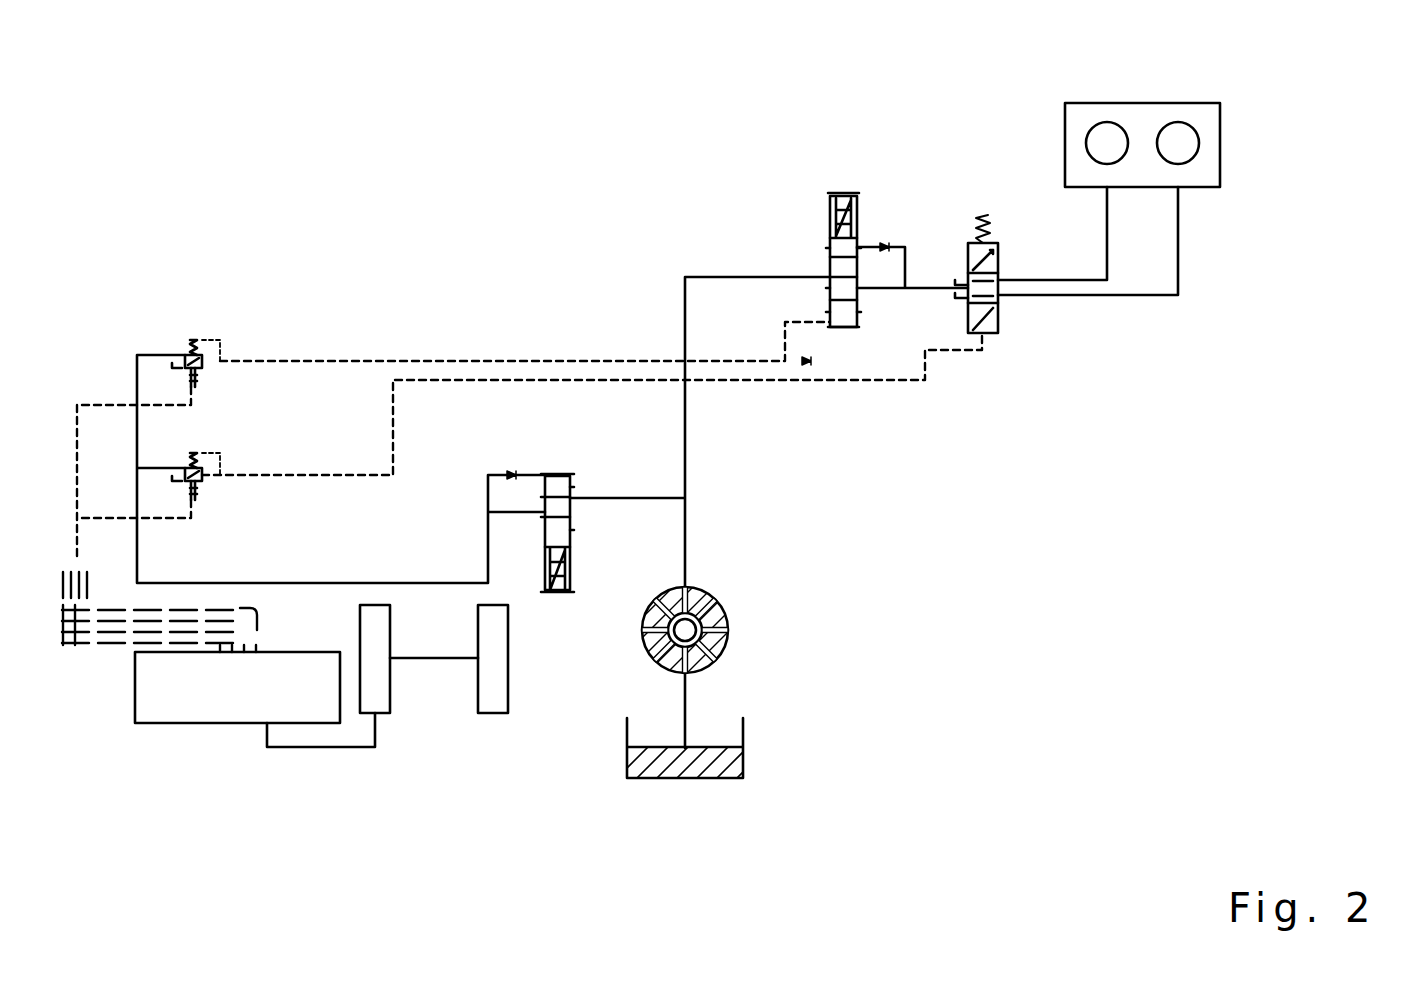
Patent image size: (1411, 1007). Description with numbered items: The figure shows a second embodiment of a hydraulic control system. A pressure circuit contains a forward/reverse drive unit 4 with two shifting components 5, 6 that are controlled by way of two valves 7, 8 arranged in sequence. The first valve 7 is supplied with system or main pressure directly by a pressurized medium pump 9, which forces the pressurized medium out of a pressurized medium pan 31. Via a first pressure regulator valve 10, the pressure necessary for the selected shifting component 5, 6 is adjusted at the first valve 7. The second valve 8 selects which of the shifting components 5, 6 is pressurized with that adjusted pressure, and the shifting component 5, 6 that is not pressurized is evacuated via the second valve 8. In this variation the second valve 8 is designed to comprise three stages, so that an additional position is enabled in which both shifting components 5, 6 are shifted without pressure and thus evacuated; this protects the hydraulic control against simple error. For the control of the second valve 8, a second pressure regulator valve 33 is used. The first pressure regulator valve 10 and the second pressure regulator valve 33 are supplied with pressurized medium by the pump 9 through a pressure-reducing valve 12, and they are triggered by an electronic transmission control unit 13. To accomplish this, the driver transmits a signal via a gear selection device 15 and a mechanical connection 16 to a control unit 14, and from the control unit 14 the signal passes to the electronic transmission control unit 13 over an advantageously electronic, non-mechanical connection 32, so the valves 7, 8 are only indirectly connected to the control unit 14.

The forward/reverse drive unit 4 is at (1208, 120).
The shifting component 5 is at (1107, 148).
The shifting component 6 is at (1178, 148).
The first valve 7 is at (833, 192).
The second valve 8 is at (988, 215).
The pressurized medium pump 9 is at (727, 652).
The first pressure regulator valve 10 is at (213, 343).
The pressure-reducing valve 12 is at (560, 597).
The electronic transmission control unit 13 is at (203, 705).
The control unit 14 is at (382, 685).
The gear selection device 15 is at (500, 677).
The mechanical connection 16 is at (432, 658).
The pressurized medium pan 31 is at (667, 763).
The non-mechanical connection 32 is at (297, 748).
The second pressure regulator valve 33 is at (213, 457).